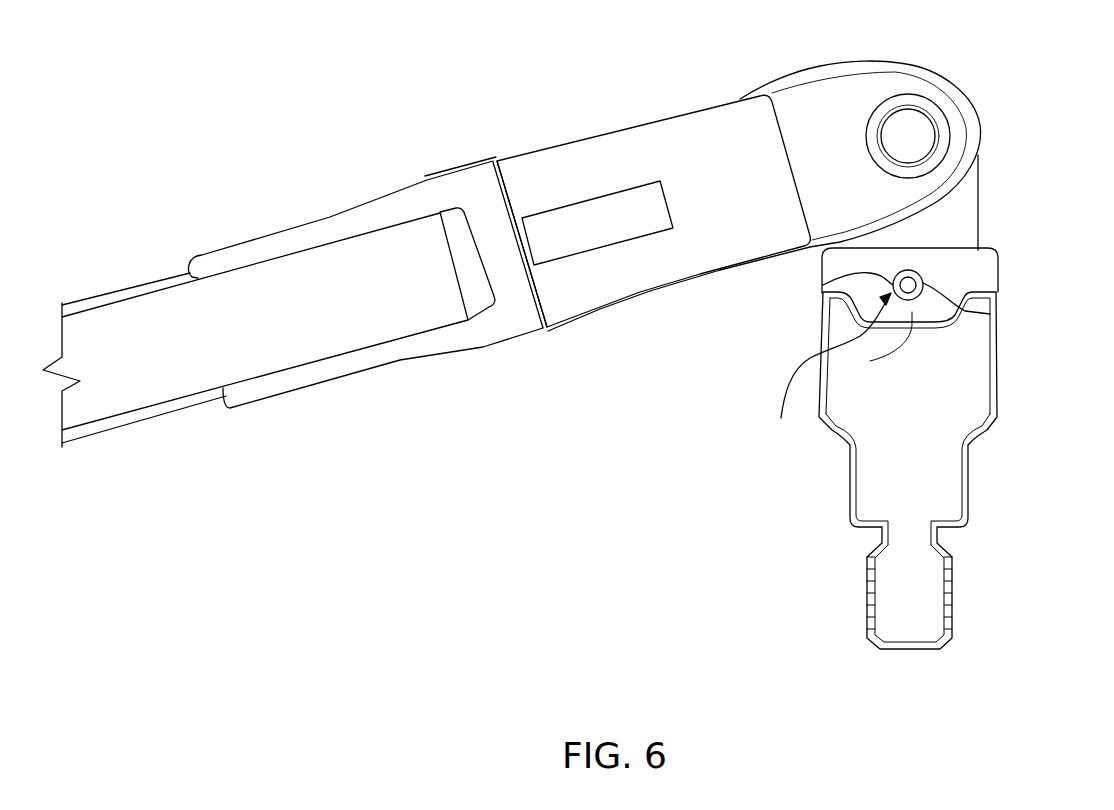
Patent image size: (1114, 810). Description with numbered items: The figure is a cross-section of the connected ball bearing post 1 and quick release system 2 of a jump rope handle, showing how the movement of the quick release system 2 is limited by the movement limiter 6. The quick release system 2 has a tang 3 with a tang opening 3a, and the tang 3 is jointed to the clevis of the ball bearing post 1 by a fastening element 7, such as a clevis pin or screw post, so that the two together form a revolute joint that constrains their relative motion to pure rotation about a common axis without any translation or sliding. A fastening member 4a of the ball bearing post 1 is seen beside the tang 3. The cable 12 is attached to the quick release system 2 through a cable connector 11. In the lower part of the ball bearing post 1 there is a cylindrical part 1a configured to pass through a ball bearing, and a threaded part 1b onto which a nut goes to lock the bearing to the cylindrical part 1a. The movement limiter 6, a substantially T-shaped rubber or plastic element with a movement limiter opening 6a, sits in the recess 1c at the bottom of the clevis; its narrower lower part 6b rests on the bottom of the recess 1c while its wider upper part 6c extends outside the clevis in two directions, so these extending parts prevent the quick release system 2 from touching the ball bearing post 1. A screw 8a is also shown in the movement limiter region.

The ball bearing post 1 is at (930, 385).
The cylindrical part 1a is at (923, 593).
The threaded part 1b is at (923, 477).
The recess in the bottom of the clevis 1c is at (937, 322).
The quick release system 2 is at (633, 285).
The tang 3 is at (840, 88).
The tang opening 3a is at (930, 110).
The fastening member 4a is at (957, 220).
The movement limiter 6 is at (821, 347).
The movement limiter opening 6a is at (821, 289).
The lower part of movement limiter 6b is at (829, 371).
The upper part of movement limiter 6c is at (957, 273).
The fastening element 7 is at (913, 145).
The screw 8a is at (992, 320).
The cable connector 11 is at (425, 200).
The cable 12 is at (132, 340).